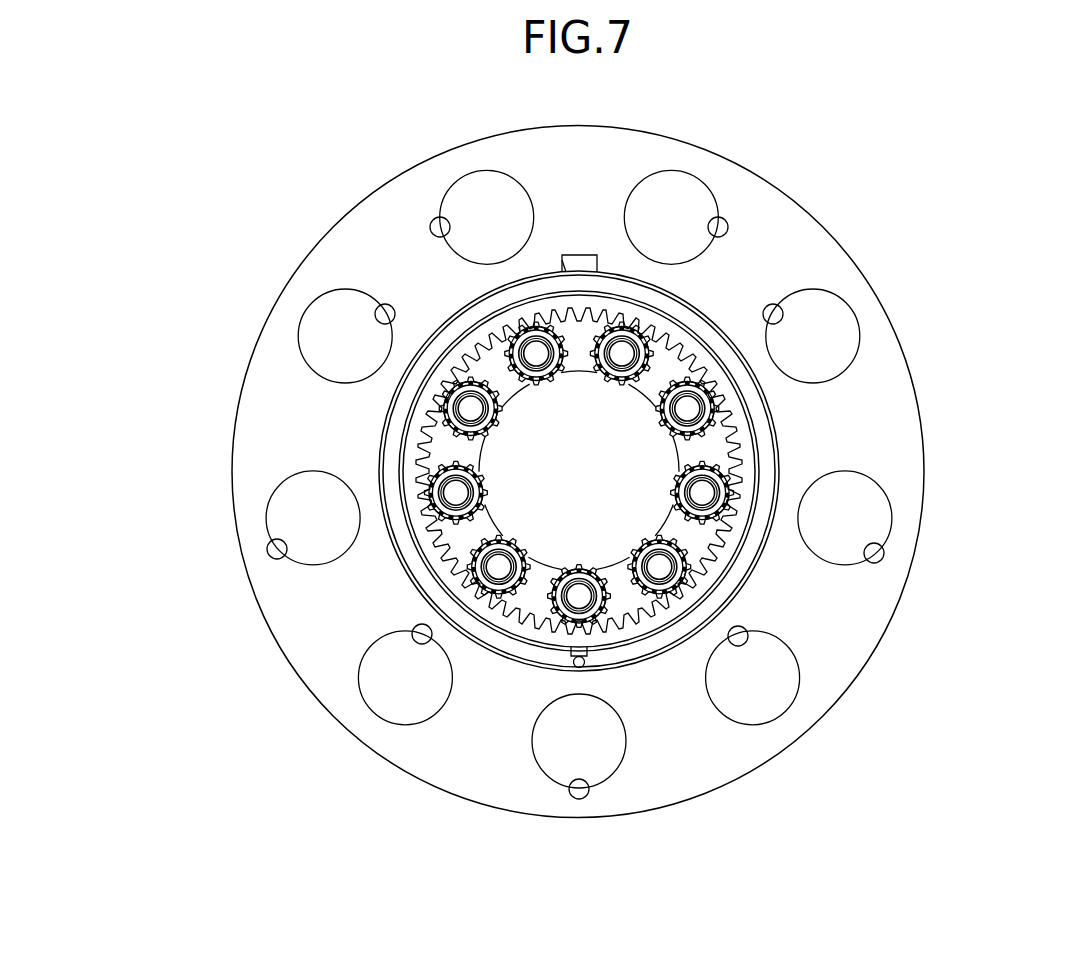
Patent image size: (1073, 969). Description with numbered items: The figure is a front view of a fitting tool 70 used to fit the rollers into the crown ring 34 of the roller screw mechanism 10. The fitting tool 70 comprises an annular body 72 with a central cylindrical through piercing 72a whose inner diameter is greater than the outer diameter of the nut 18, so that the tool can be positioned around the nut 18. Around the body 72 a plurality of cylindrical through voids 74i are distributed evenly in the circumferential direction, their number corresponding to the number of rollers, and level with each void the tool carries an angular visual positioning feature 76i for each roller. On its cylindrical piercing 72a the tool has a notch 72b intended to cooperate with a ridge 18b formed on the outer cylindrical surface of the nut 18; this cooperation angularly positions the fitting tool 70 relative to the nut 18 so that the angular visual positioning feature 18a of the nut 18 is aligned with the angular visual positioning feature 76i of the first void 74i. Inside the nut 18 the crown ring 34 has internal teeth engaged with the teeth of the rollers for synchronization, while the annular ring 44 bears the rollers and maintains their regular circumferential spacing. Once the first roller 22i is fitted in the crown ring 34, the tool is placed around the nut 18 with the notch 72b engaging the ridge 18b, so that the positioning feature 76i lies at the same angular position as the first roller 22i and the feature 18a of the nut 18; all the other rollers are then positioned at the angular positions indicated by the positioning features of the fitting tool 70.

The roller screw mechanism 10 is at (802, 126).
The nut 18 is at (735, 563).
The angular visual positioning feature 18a is at (580, 667).
The ridge 18b is at (581, 263).
The first roller 22i is at (577, 592).
The crown ring 34 is at (650, 623).
The annular ring 44 is at (528, 603).
The fitting tool 70 is at (932, 449).
The annular body 72 is at (903, 388).
The cylindrical through piercing 72a is at (400, 555).
The notch 72b is at (560, 269).
The cylindrical through void 74i is at (560, 768).
The angular visual positioning feature 76i is at (581, 800).